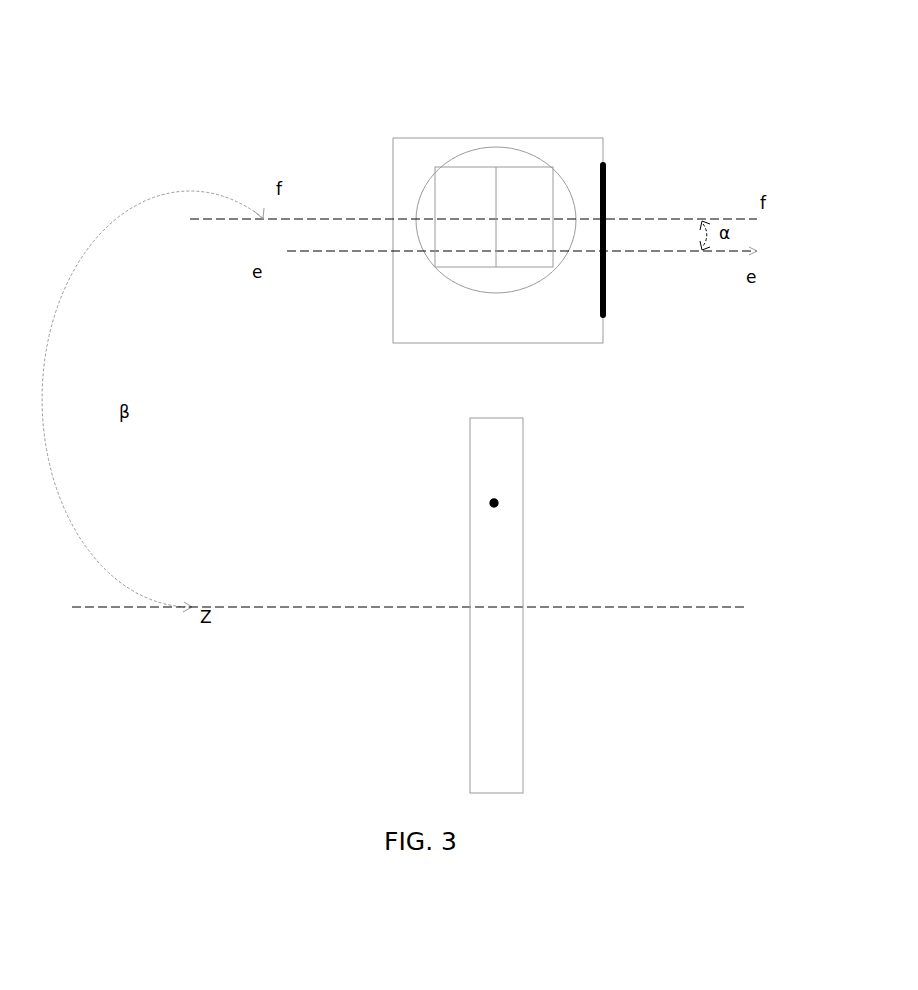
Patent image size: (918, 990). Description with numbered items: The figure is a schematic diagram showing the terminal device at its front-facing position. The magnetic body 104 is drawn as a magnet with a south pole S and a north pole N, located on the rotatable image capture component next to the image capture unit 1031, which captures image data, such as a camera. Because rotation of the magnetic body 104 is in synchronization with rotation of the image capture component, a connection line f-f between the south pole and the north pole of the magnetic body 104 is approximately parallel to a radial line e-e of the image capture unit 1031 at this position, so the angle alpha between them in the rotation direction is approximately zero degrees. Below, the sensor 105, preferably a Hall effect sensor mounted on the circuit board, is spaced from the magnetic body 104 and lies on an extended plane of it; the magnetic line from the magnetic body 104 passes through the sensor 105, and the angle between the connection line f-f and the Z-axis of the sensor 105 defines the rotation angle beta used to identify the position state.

The magnetic body 104 is at (462, 190).
The image capture unit 1031 is at (605, 197).
The sensor 105 is at (492, 502).